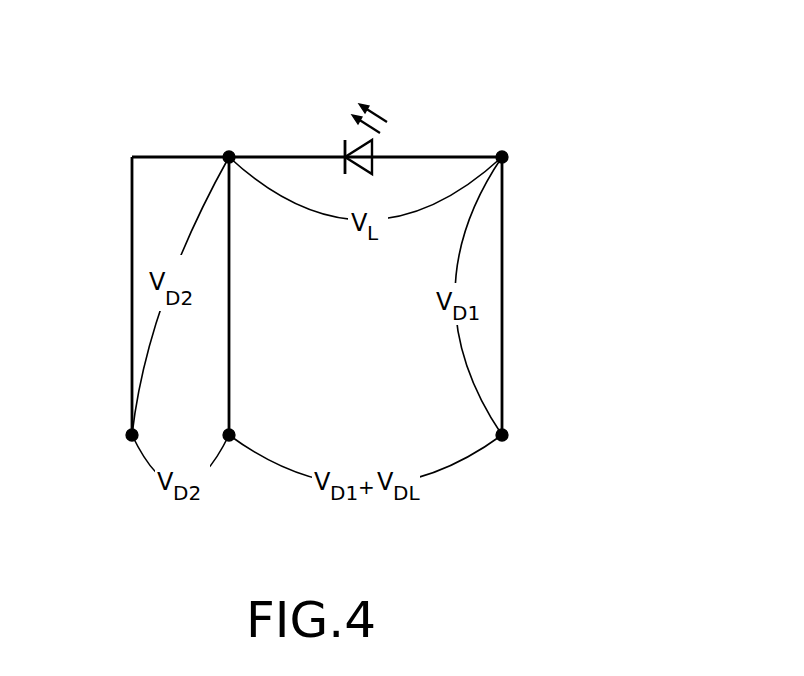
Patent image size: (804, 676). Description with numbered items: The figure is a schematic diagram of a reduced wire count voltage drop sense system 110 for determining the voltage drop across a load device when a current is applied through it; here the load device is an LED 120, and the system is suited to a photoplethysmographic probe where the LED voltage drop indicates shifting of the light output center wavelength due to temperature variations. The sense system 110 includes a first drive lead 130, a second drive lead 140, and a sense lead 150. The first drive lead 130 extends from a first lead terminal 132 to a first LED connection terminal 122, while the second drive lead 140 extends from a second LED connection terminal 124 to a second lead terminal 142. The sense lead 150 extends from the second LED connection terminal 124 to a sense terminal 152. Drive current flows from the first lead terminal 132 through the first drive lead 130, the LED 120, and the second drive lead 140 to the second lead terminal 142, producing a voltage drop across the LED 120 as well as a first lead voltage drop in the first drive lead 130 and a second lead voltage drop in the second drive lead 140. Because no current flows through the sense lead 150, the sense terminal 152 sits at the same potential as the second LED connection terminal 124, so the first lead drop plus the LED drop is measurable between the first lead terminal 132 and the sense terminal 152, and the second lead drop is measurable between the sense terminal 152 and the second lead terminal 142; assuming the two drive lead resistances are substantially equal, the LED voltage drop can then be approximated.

The reduced wire count voltage drop sense system 110 is at (583, 92).
The LED 120 is at (377, 143).
The first LED connection terminal 122 is at (502, 157).
The second LED connection terminal 124 is at (229, 157).
The first drive lead 130 is at (502, 300).
The first lead terminal 132 is at (502, 435).
The second drive lead 140 is at (132, 290).
The second lead terminal 142 is at (132, 435).
The sense lead 150 is at (229, 328).
The sense terminal 152 is at (229, 435).